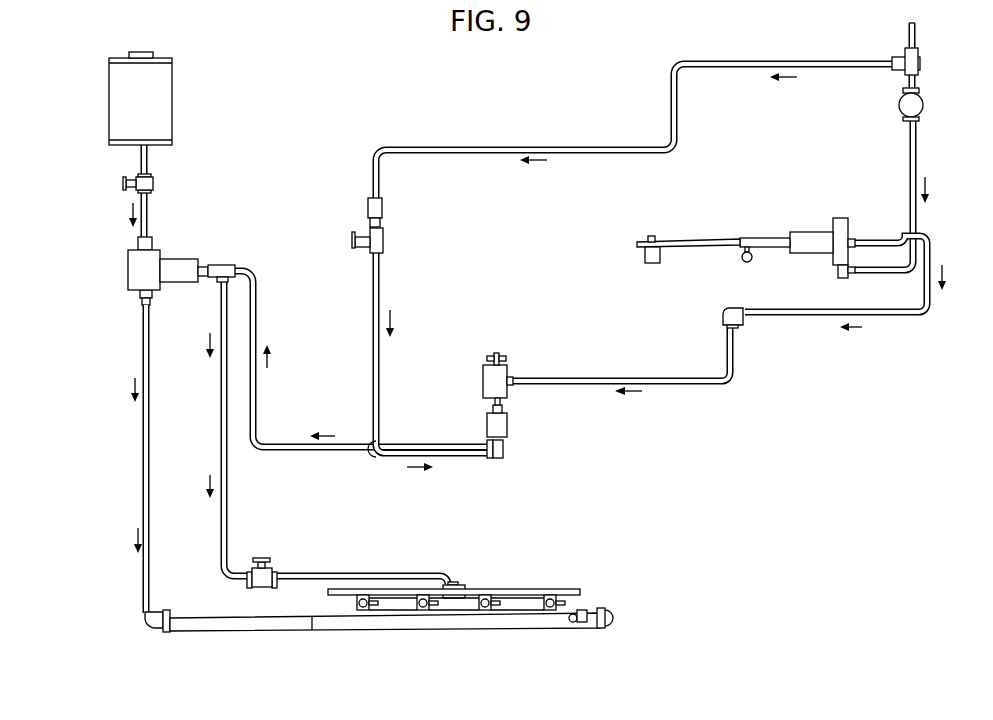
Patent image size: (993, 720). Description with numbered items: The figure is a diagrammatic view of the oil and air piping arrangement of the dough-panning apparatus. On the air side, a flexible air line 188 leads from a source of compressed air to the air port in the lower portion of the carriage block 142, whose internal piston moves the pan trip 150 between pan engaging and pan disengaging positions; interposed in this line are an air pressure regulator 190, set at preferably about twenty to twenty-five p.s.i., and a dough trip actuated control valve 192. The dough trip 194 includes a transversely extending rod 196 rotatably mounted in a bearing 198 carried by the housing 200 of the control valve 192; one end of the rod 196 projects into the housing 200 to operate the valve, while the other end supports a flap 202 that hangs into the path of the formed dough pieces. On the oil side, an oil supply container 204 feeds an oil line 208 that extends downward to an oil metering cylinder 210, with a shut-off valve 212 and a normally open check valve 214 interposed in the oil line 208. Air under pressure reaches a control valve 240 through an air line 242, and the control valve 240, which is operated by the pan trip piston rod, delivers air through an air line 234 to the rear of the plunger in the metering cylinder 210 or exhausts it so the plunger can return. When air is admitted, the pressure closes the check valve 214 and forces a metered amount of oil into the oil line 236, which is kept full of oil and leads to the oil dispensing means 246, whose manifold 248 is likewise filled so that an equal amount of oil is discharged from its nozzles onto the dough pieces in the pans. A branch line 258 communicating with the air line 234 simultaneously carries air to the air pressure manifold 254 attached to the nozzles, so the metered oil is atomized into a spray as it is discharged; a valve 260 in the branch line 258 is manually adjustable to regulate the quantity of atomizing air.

The carriage block 142 is at (508, 400).
The pan trip 150 is at (499, 355).
The flexible air line 188 is at (917, 155).
The air pressure regulator 190 is at (923, 100).
The dough trip actuated control valve 192 is at (843, 220).
The dough trip 194 is at (720, 227).
The rod 196 is at (690, 246).
The bearing 198 is at (798, 232).
The housing 200 is at (851, 236).
The flap 202 is at (645, 265).
The oil supply container 204 is at (175, 88).
The oil line 208 is at (147, 223).
The oil metering cylinder 210 is at (187, 257).
The shut-off valve 212 is at (152, 180).
The normally open check valve 214 is at (138, 243).
The air line 234 is at (257, 285).
The oil line 236 is at (150, 372).
The control valve 240 is at (508, 430).
The air line 242 is at (532, 130).
The oil dispensing means 246 is at (583, 597).
The manifold 248 is at (493, 627).
The air pressure manifold 254 is at (488, 588).
The branch line 258 is at (228, 497).
The valve 260 is at (268, 568).